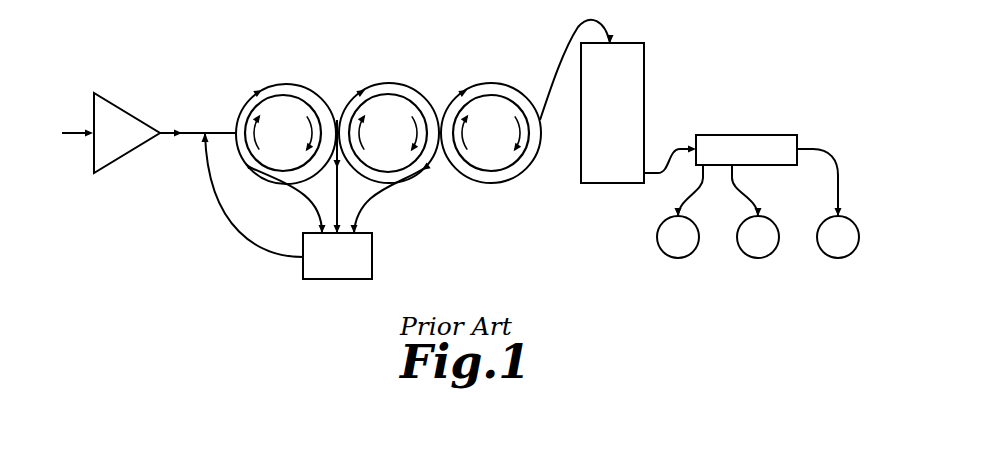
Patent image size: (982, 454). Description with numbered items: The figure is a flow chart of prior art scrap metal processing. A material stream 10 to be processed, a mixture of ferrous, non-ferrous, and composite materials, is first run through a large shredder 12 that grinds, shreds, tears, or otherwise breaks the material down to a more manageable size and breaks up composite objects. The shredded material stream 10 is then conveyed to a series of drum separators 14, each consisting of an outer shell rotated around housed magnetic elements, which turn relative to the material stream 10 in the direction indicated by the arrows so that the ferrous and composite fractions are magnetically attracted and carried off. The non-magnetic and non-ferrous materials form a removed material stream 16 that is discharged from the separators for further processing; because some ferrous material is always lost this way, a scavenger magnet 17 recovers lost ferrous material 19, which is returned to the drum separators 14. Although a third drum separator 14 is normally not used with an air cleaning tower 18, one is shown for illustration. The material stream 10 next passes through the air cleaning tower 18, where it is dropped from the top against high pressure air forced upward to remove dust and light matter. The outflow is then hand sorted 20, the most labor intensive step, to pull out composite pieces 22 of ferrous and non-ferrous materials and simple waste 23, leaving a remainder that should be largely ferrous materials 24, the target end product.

The material stream 10 is at (682, 143).
The shredder 12 is at (115, 148).
The drum separator 14 is at (280, 103).
The removed material stream 16 is at (337, 176).
The scavenger magnet 17 is at (372, 255).
The air cleaning tower 18 is at (640, 62).
The lost ferrous material 19 is at (210, 188).
The hand sorting 20 is at (743, 135).
The composite pieces 22 is at (758, 248).
The waste 23 is at (678, 248).
The ferrous materials 24 is at (838, 248).